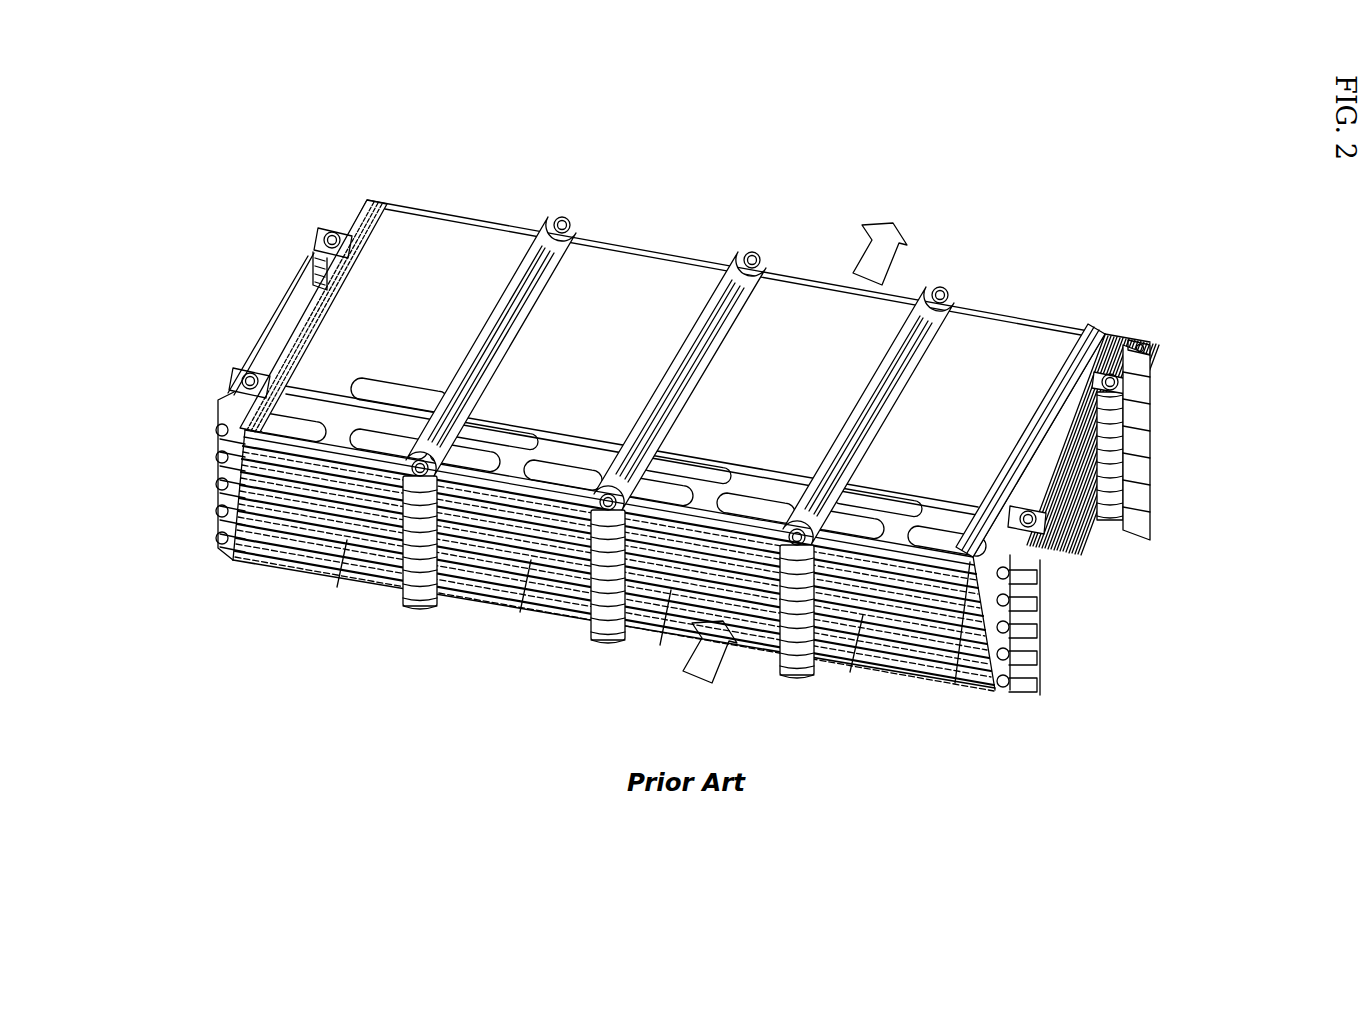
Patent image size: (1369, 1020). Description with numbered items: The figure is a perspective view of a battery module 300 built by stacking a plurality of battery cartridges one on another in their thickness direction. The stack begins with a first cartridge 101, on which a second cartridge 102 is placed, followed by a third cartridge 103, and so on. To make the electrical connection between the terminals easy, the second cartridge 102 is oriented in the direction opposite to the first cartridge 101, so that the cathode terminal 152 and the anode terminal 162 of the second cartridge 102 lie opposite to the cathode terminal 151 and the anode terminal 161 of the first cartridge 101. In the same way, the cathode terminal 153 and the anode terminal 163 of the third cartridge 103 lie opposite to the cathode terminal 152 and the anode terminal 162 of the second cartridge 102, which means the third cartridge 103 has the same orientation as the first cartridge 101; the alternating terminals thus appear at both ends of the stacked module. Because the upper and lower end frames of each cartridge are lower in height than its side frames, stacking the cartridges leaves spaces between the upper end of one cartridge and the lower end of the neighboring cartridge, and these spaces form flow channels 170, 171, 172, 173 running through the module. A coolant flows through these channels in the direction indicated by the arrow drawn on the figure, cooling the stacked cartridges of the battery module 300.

The battery module 300 is at (733, 185).
The first cartridge 101 is at (954, 685).
The second cartridge 102 is at (1152, 365).
The third cartridge 103 is at (215, 470).
The cathode terminal 151 is at (1082, 567).
The cathode terminal 152 is at (352, 215).
The cathode terminal 153 is at (215, 457).
The anode terminal 161 is at (215, 430).
The anode terminal 162 is at (1135, 338).
The anode terminal 163 is at (1062, 592).
The flow channel 170 is at (851, 674).
The flow channel 171 is at (661, 647).
The flow channel 172 is at (521, 614).
The flow channel 173 is at (337, 589).